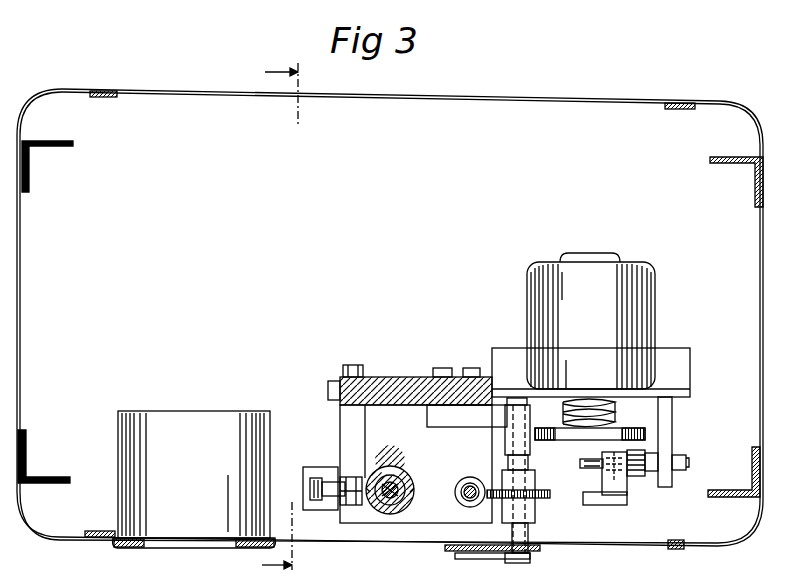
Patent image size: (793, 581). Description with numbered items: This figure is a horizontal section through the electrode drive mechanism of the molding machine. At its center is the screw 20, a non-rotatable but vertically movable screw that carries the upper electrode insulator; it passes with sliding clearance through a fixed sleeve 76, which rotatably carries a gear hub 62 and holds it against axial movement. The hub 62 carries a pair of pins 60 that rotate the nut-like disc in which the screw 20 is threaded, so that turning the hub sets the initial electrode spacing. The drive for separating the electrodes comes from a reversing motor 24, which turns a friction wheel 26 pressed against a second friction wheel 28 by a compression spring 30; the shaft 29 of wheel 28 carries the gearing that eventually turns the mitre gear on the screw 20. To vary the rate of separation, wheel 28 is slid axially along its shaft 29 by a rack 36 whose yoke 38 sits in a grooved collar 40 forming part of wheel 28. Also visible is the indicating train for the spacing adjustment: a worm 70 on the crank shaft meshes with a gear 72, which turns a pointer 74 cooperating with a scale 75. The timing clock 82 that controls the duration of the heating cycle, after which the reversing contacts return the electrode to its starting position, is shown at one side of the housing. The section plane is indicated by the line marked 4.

The section line 4- 4 is at (289, 321).
The screw 20 is at (417, 453).
The motor 24 is at (640, 311).
The friction wheel 26 is at (560, 440).
The friction wheel 28 is at (646, 480).
The shaft 29 is at (582, 466).
The compression spring 30 is at (612, 415).
The rack 36 is at (600, 500).
The yoke 38 is at (611, 482).
The grooved collar 40 is at (631, 480).
The pins 60 is at (410, 492).
The hub 62 is at (400, 478).
The worm 70 is at (470, 477).
The gear 72 is at (533, 493).
The pointer 74 is at (470, 559).
The scale 75 is at (445, 551).
The sleeve 76 is at (388, 481).
The timing clock 82 is at (172, 456).